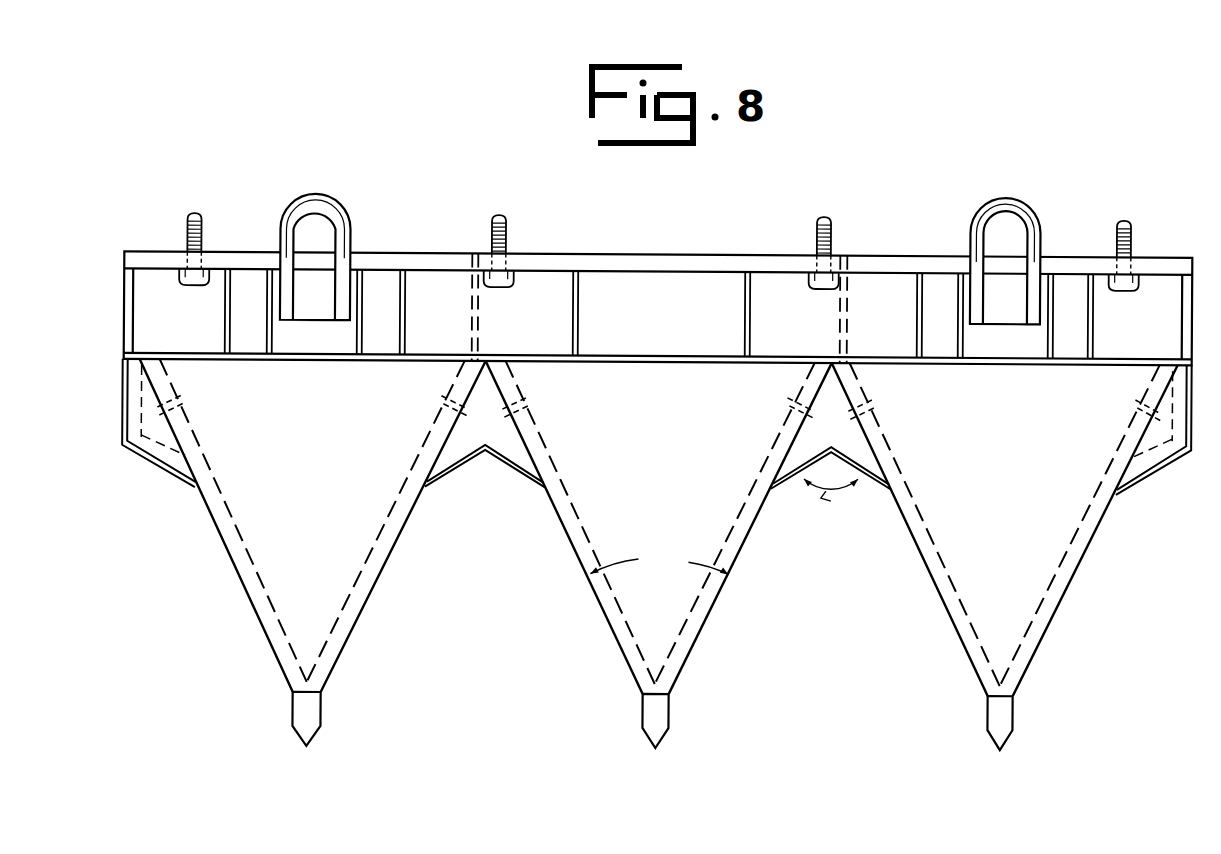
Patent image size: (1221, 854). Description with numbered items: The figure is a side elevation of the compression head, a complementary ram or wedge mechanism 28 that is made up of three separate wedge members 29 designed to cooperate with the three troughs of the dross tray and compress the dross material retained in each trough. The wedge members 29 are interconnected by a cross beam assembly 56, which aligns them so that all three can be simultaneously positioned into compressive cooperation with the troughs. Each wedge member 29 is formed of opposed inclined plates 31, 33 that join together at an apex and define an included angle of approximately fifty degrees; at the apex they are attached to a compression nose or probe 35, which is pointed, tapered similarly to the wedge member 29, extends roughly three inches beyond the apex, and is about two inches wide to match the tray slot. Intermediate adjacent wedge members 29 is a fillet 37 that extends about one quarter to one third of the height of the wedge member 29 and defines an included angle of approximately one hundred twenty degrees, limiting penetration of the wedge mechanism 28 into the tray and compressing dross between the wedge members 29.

The wedge mechanism 28 is at (562, 201).
The cross beam assembly 56 is at (645, 275).
The wedge member 29 is at (388, 565).
The inclined plate 31 is at (579, 558).
The inclined plate 33 is at (683, 648).
The compression nose or probe 35 is at (672, 716).
The fillet 37 is at (856, 448).